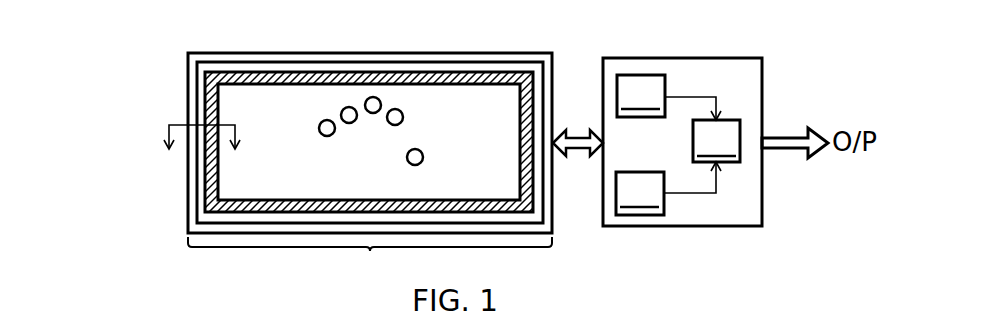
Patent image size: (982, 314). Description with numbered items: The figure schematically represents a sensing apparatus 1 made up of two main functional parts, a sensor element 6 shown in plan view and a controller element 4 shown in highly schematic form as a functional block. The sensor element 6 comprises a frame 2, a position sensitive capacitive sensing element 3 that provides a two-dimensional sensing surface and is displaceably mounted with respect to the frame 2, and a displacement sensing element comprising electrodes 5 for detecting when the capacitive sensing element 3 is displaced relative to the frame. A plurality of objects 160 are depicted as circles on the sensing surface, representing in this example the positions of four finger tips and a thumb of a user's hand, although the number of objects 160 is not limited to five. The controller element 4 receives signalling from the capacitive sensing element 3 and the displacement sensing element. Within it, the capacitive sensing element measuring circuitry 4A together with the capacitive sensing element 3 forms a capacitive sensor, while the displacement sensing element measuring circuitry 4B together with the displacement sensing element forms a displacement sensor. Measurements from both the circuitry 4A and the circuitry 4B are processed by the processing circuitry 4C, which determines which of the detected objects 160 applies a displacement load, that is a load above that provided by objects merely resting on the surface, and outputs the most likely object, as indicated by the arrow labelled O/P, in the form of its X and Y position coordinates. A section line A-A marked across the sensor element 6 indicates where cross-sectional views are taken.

The sensing apparatus 1 is at (102, 78).
The frame 2 is at (402, 58).
The position sensitive capacitive sensing element 3 is at (460, 62).
The electrode 5 is at (432, 72).
The sensor element 6 is at (370, 263).
The objects 160 is at (357, 100).
The controller element 4 is at (692, 58).
The capacitive sensing element measuring circuitry 4A is at (641, 96).
The displacement sensing element measuring circuitry 4B is at (640, 193).
The processing circuitry 4C is at (716, 141).